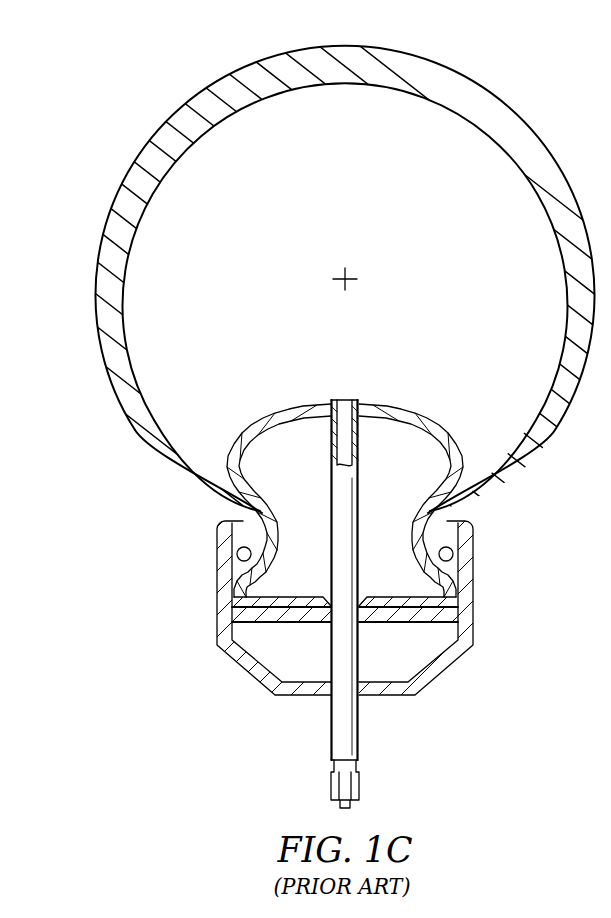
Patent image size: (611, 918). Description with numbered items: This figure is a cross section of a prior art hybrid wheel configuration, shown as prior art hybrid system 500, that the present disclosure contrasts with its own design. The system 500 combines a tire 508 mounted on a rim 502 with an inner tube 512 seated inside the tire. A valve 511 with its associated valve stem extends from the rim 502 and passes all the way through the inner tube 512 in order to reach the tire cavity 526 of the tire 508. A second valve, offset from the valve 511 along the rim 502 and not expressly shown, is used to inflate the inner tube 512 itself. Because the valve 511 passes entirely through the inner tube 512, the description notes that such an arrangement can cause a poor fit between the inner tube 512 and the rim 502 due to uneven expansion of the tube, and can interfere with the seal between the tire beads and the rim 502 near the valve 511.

The prior art hybrid system 500 is at (530, 91).
The rim 502 is at (215, 627).
The tire 508 is at (196, 96).
The valve 511 is at (330, 741).
The inner tube 512 is at (290, 404).
The tire cavity 526 is at (350, 271).